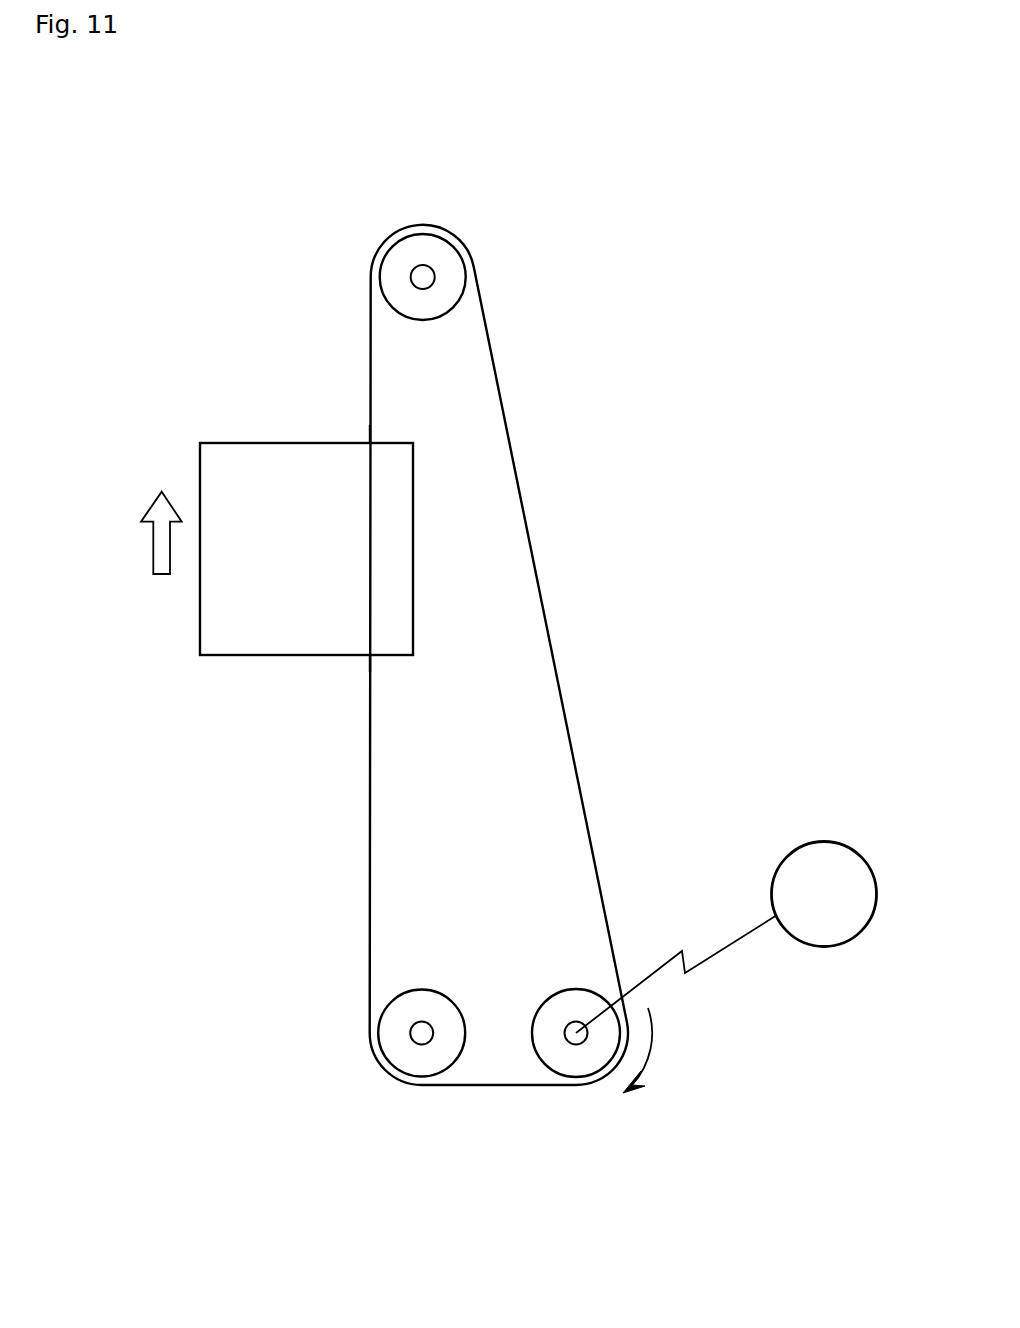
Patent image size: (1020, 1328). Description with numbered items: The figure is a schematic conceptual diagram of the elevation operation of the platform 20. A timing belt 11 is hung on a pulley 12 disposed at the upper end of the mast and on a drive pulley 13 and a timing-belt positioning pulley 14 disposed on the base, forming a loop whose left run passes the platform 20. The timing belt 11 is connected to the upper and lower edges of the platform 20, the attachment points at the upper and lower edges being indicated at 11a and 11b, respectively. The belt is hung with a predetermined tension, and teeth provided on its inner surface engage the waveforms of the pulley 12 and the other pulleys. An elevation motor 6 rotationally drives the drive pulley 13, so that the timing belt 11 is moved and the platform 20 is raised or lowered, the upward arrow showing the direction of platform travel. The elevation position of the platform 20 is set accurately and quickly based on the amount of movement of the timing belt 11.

The timing belt 11 is at (545, 615).
The belt upstream portion 11a is at (368, 443).
The belt downstream portion 11b is at (369, 655).
The pulley 12 is at (465, 250).
The drive pulley 13 is at (553, 1065).
The timing-belt positioning pulley 14 is at (380, 1058).
The platform 20 is at (259, 420).
The elevation motor 6 is at (813, 842).